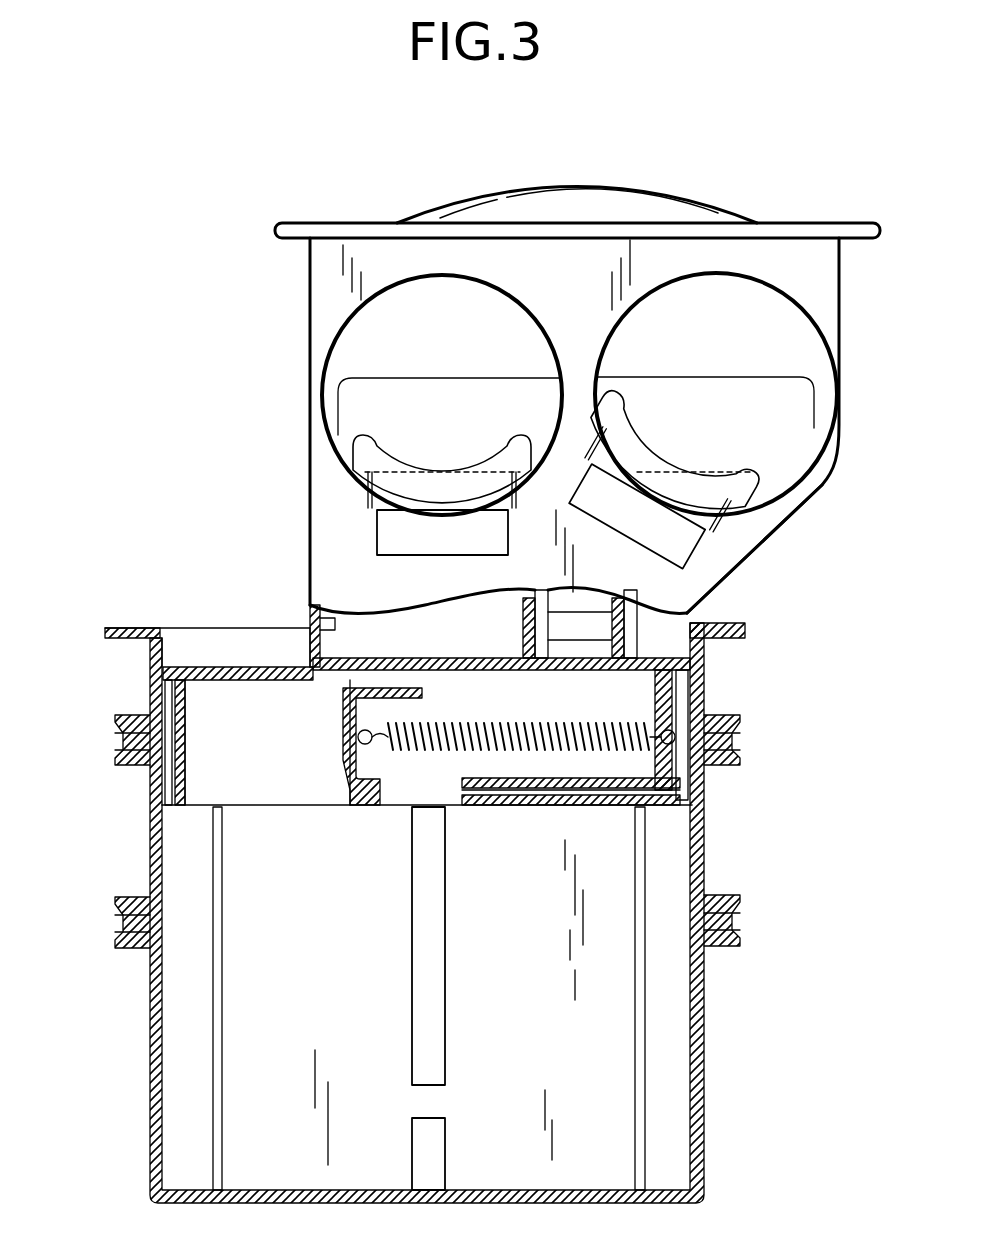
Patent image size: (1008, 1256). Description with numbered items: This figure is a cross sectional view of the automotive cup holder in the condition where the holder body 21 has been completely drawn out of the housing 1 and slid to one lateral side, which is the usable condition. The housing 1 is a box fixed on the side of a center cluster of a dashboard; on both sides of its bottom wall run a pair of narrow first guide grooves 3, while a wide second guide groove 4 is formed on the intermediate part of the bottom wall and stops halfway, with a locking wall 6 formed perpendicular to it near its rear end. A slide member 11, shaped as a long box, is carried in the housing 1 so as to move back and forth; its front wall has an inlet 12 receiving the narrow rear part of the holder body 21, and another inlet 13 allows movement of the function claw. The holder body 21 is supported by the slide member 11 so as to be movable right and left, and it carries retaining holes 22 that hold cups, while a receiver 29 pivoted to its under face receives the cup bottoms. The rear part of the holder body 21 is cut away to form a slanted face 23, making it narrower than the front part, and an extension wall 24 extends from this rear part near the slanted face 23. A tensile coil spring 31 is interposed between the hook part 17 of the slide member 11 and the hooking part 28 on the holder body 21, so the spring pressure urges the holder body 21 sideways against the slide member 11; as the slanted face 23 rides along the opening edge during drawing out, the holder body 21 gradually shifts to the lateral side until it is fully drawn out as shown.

The housing 1 is at (126, 1136).
The first guide grooves 3 is at (222, 985).
The second guide groove 4 is at (428, 950).
The locking wall 6 is at (430, 1098).
The slide member 11 is at (212, 644).
The inlet 12 is at (327, 682).
The inlet 13 is at (302, 816).
The hook part 17 is at (668, 716).
The holder body 21 is at (380, 200).
The retaining holes 22 is at (355, 330).
The slanted face 23 is at (752, 538).
The extension wall 24 is at (354, 762).
The hooking part 28 is at (361, 731).
The receiver 29 is at (800, 418).
The tensile coil spring 31 is at (495, 727).